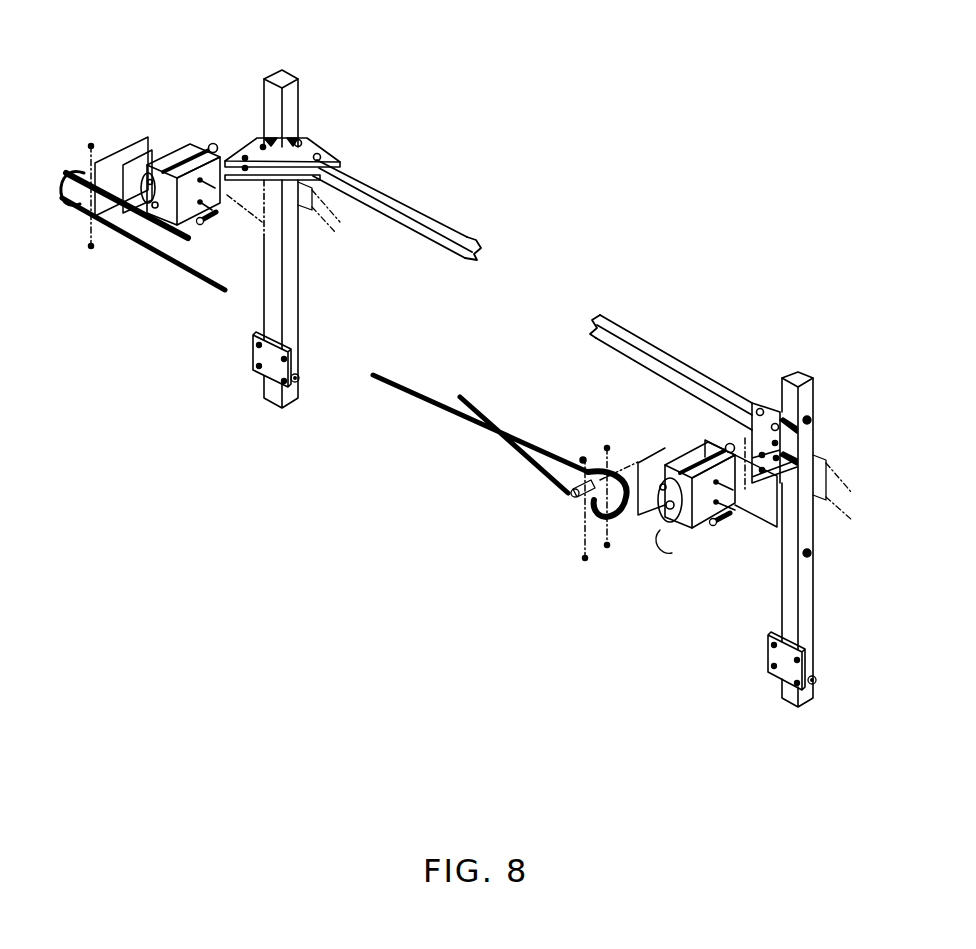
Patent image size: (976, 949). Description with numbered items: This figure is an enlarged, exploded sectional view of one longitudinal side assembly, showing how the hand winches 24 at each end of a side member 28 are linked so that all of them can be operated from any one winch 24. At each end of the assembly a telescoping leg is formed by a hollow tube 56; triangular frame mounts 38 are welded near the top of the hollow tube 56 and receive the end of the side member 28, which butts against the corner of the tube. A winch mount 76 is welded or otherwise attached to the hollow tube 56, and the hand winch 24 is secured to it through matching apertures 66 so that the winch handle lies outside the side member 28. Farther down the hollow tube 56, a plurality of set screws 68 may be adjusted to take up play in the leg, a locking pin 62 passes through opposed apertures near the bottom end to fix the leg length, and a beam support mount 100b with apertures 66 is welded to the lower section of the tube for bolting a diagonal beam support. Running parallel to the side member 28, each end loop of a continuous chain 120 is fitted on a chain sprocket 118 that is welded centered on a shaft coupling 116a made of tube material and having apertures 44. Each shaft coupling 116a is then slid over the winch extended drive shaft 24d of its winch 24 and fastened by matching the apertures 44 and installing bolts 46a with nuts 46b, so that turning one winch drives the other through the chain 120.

The hand winch 24 is at (690, 547).
The winch extended drive shaft 24d is at (160, 178).
The side member 28 is at (460, 237).
The frame mount 38 is at (313, 142).
The aperture 44 is at (62, 117).
The bolt 46a is at (91, 146).
The nut 46b is at (91, 246).
The hollow tube 56 is at (296, 97).
The locking pin 62 is at (298, 377).
The aperture 66 is at (190, 205).
The set screw 68 is at (810, 418).
The winch mount 76 is at (820, 470).
The beam support mount 100b is at (264, 353).
The shaft coupling 116a is at (577, 497).
The chain sprocket 118 is at (593, 524).
The continuous chain 120 is at (435, 422).